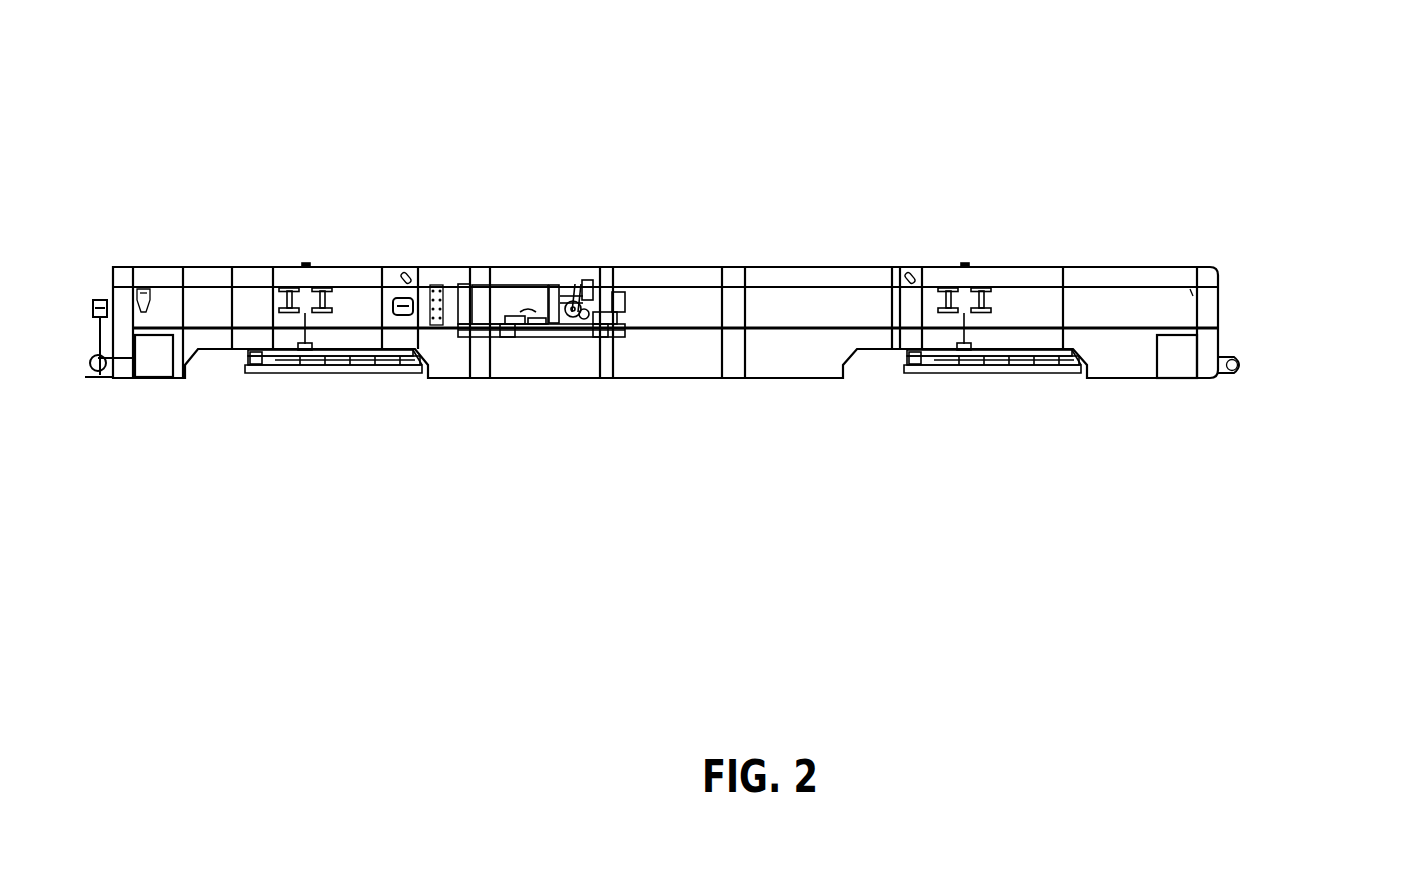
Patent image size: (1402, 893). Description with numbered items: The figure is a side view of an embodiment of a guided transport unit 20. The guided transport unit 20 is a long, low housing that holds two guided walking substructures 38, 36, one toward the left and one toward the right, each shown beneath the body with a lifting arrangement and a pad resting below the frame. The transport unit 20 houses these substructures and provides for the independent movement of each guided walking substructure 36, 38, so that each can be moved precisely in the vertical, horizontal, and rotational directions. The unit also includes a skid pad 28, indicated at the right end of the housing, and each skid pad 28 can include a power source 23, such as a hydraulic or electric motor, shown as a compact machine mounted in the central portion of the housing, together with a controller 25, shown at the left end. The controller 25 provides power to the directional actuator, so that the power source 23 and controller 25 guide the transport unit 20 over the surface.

The guided transport unit 20 is at (677, 200).
The power source 23 is at (498, 307).
The controller 25 is at (100, 318).
The skid pad 28 is at (1258, 324).
The guided walking substructure 36 is at (954, 410).
The guided walking substructure 38 is at (362, 410).